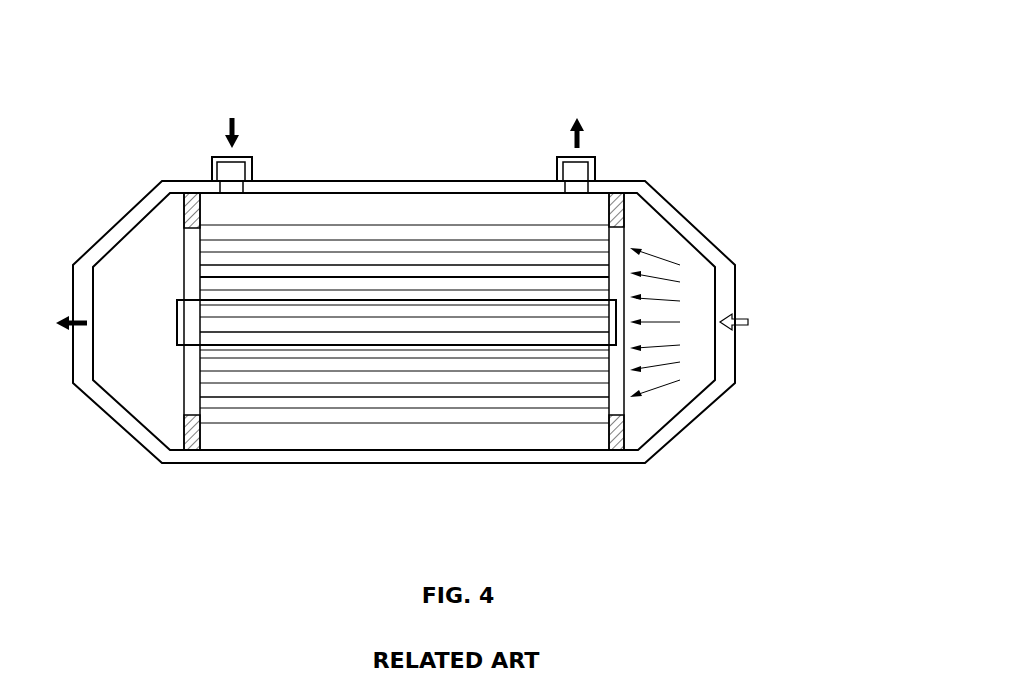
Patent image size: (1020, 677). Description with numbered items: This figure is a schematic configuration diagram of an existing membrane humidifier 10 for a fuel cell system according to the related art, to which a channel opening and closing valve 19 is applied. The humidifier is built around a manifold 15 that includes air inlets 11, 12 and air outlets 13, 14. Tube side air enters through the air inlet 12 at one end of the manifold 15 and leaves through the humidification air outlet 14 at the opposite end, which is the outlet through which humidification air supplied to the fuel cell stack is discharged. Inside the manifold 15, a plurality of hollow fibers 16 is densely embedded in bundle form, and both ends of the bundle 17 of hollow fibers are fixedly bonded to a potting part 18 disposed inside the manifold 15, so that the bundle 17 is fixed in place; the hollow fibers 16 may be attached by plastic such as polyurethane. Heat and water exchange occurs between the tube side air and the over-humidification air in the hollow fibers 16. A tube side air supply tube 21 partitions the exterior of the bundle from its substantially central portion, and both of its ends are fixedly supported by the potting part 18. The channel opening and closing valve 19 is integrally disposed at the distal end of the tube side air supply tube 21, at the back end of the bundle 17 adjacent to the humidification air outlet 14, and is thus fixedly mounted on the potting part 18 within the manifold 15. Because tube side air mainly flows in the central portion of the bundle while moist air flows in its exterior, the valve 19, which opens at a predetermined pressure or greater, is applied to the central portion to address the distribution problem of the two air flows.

The membrane humidifier 10 is at (459, 299).
The air inlet 11 is at (223, 168).
The air inlet 12 is at (725, 282).
The air outlet 13 is at (587, 172).
The humidification air outlet 14 is at (80, 350).
The manifold 15 is at (512, 188).
The hollow fibers 16 is at (561, 423).
The bundle of hollow fibers 17 is at (422, 428).
The potting part 18 is at (190, 392).
The channel opening and closing valve 19 is at (177, 312).
The tube side air supply tube 21 is at (281, 345).